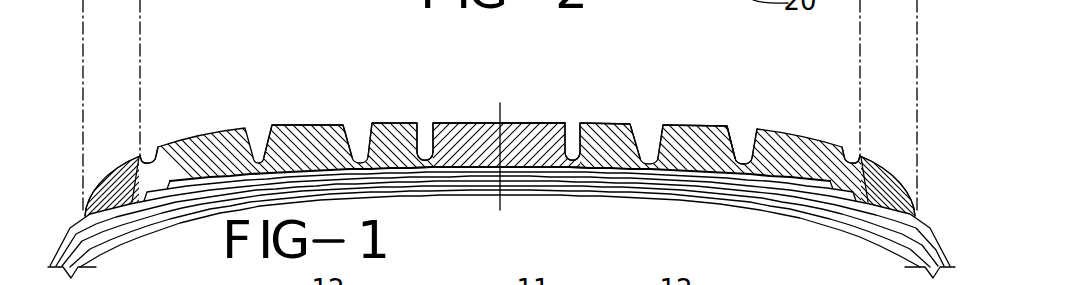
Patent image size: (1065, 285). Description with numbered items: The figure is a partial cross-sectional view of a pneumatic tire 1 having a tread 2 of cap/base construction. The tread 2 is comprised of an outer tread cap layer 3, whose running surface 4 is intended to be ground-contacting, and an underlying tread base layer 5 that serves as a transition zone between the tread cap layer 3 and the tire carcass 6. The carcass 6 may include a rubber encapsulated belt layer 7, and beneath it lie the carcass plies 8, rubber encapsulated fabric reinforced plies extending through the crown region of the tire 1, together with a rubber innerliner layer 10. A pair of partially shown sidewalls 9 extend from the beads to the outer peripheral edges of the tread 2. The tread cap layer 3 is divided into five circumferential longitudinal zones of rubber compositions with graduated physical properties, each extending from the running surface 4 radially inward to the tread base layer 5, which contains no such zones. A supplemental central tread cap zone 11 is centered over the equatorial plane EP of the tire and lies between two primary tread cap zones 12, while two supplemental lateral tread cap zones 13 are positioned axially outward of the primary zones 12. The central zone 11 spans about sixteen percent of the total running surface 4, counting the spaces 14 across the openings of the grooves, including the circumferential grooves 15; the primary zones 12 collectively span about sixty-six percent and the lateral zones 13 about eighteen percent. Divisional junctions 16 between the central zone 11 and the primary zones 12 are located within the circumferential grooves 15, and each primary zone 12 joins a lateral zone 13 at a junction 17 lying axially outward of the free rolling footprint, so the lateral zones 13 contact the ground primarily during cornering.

The tire 1 is at (227, 97).
The tread 2 is at (300, 117).
The outer tread cap layer 3 is at (493, 133).
The running surface 4 is at (402, 124).
The tread base layer 5 is at (610, 167).
The tire carcass 6 is at (768, 177).
The rubber encapsulated belt layer 7 is at (687, 178).
The carcass plies 8 is at (855, 217).
The sidewalls 9 is at (60, 258).
The rubber innerliner layer 10 is at (795, 209).
The supplemental central tread cap zone 11 is at (530, 118).
The primary tread cap zones 12 is at (322, 120).
The supplemental lateral tread cap zones 13 is at (116, 164).
The spaces across groove openings 14 is at (748, 123).
The circumferential grooves 15 is at (423, 146).
The divisional junctions 16 is at (423, 168).
The junction 17 is at (168, 155).
The equatorial plane EP is at (499, 173).